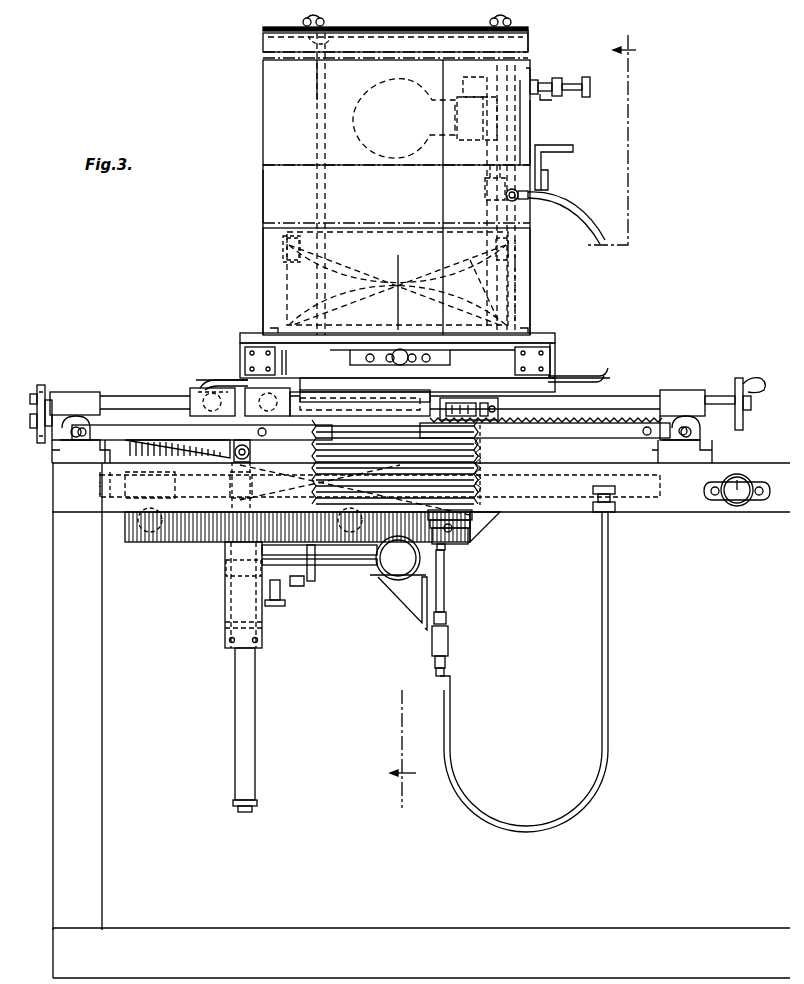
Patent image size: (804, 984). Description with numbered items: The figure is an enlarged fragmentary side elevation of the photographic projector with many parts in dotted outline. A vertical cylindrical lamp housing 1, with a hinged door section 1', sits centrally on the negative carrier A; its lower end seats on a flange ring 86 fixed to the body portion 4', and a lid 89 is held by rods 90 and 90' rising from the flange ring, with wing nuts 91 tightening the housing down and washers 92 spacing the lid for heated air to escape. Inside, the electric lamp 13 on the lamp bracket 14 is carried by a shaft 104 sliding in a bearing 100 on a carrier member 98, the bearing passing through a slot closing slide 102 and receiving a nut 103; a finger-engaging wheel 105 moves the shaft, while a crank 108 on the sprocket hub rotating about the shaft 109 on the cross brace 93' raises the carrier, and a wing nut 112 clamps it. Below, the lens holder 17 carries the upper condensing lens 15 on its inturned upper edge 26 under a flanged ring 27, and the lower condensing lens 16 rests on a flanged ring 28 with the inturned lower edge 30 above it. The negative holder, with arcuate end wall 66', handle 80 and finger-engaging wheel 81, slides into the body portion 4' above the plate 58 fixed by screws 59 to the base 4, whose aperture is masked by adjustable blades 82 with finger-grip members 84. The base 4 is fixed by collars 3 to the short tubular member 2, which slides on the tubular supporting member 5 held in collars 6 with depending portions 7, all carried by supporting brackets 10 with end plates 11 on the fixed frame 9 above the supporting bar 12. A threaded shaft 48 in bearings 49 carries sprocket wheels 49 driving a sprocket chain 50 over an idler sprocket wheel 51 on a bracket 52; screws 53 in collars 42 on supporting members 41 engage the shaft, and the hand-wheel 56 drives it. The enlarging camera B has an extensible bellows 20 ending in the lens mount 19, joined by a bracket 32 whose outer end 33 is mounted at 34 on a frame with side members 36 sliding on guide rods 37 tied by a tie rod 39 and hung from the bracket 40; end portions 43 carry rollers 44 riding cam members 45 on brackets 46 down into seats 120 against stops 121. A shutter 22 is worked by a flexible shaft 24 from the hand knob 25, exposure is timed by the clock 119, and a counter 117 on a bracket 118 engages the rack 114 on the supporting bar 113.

The lamp housing 1 is at (408, 184).
The door section 1' is at (247, 196).
The wing nuts 91 is at (305, 20).
The washers 92 is at (308, 40).
The lid 89 is at (528, 32).
The rods 90 is at (519, 70).
The rods 90' is at (271, 80).
The bearing 100 is at (533, 74).
The electric lamp 13 is at (378, 90).
The lamp bracket 14 is at (458, 110).
The carrier member 98 is at (520, 110).
The finger-engaging wheel 105 is at (574, 76).
The shaft 104 is at (572, 92).
The nut 103 is at (546, 100).
The slot closing slide 102 is at (536, 130).
The crank 108 is at (560, 152).
The wing nut 112 is at (555, 186).
The shaft 109 is at (548, 196).
The cross brace 93' is at (476, 182).
The upper condensing lens 15 is at (350, 250).
The flanged ring 27 is at (285, 238).
The inturned upper edge 26 is at (285, 250).
The lens holder 17 is at (285, 272).
The lower condensing lens 16 is at (350, 280).
The inturned lower edge 30 is at (496, 298).
The flanged ring 28 is at (524, 284).
The handle 80 is at (386, 355).
The finger-engaging wheel 81 is at (404, 352).
The arcuate shaped end wall 66' is at (345, 328).
The plate 58 is at (460, 350).
The screws 59 is at (272, 330).
The negative carrier A is at (556, 330).
The flange ring 86 is at (258, 346).
The idler sprocket wheel 51 is at (512, 358).
The body portion 4' is at (569, 347).
The adjustable blades 82 is at (210, 382).
The members 84 is at (198, 384).
The base 4 is at (449, 368).
The short tubular member 2 is at (318, 392).
The collars 3 is at (362, 404).
The bracket 40 is at (196, 384).
The collars 42 is at (186, 390).
The counter 117 is at (442, 420).
The supporting bar 113 is at (138, 400).
The tubular supporting member 5 is at (112, 402).
The collars 6 is at (82, 402).
The transversely extending portions 7 is at (62, 420).
The sprocket wheels 49 is at (38, 386).
The threaded shaft 48 is at (36, 402).
The sprocket chain 50 is at (36, 420).
The bracket 52 is at (40, 438).
The hand-wheel 56 is at (748, 380).
The supporting brackets 10 is at (56, 445).
The end plates 11 is at (100, 462).
The fixed frame 9 is at (680, 512).
The supporting members 41 is at (282, 436).
The screws 53 is at (240, 444).
The rollers 44 is at (232, 462).
The end portions 43 is at (250, 462).
The brackets 46 is at (350, 512).
The cam members 45 is at (400, 512).
The bracket 118 is at (564, 420).
The rack 114 is at (570, 438).
The extensible bellows 20 is at (480, 440).
The supporting bar 12 is at (154, 540).
The side members 36 is at (228, 557).
The mounting 34 is at (240, 574).
The guide rods 37 is at (252, 766).
The tie rod 39 is at (256, 804).
The bracket 32 is at (348, 566).
The lens mount 19 is at (380, 578).
The outer end 33 is at (274, 598).
The enlarging camera B is at (470, 522).
The stops 121 is at (470, 530).
The seats 120 is at (458, 546).
The shutter 22 is at (448, 600).
The flexible shaft 24 is at (604, 602).
The hand knob 25 is at (626, 505).
The clock 119 is at (735, 506).